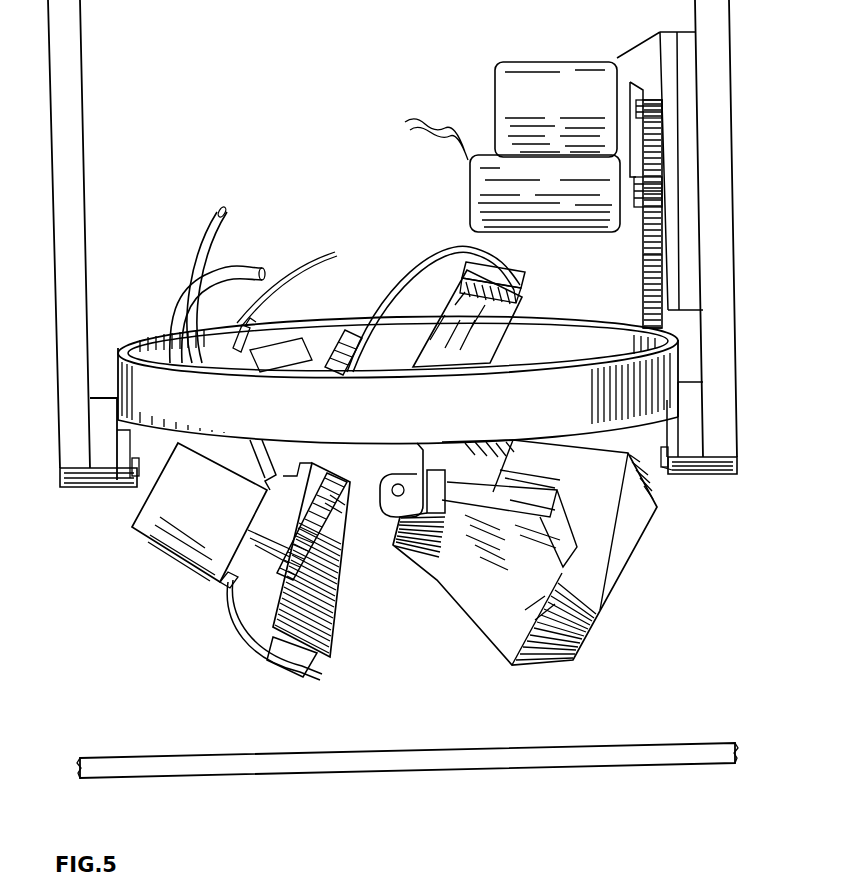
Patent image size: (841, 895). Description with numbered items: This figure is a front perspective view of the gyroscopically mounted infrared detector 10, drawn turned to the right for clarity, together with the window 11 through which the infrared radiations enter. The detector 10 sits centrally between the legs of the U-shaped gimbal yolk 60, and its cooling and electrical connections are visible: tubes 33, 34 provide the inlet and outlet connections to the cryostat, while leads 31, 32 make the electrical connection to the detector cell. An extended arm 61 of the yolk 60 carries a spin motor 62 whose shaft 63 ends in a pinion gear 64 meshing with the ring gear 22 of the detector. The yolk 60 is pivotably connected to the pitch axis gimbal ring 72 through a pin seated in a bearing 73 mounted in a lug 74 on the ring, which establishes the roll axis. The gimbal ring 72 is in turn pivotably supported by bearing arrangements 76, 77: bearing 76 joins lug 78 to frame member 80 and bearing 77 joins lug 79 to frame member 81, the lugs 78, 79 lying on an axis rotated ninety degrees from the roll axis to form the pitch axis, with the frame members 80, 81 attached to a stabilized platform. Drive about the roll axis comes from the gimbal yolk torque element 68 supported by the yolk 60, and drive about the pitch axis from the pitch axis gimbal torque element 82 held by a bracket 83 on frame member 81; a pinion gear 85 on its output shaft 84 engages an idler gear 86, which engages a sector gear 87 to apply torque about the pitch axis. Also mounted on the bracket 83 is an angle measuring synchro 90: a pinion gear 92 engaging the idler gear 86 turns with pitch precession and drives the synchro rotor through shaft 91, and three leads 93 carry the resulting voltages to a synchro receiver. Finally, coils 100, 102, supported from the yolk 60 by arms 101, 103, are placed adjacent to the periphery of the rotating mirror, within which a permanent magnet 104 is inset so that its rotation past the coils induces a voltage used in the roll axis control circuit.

The detector 10 is at (412, 576).
The window 11 is at (122, 757).
The ring gear 22 is at (328, 495).
The lead 31 is at (240, 330).
The lead 32 is at (265, 322).
The tube 33 is at (185, 297).
The tube 34 is at (230, 216).
The gimbal yolk 60 is at (346, 335).
The extended arm 61 is at (226, 588).
The spin motor 62 is at (180, 545).
The shaft 63 is at (278, 556).
The pinion gear 64 is at (290, 600).
The gimbal yolk torque element 68 is at (256, 455).
The pitch axis gimbal ring 72 is at (536, 372).
The bearing 73 is at (416, 472).
The lug 74 is at (446, 472).
The bearing 76 is at (135, 480).
The bearing 77 is at (668, 472).
The lug 78 is at (135, 456).
The lug 79 is at (668, 440).
The frame member 80 is at (58, 440).
The frame member 81 is at (725, 336).
The pitch axis gimbal torque element 82 is at (522, 68).
The bracket 83 is at (648, 60).
The output shaft 84 is at (628, 110).
The pinion gear 85 is at (662, 104).
The idler gear 86 is at (643, 268).
The sector gear 87 is at (643, 318).
The angle measuring synchro 90 is at (470, 190).
The shaft 91 is at (633, 215).
The pinion gear 92 is at (663, 195).
The leads 93 is at (420, 139).
The coil 100 is at (310, 675).
The arm 101 is at (262, 650).
The coil 102 is at (525, 272).
The arm 103 is at (430, 257).
The permanent magnet 104 is at (523, 302).